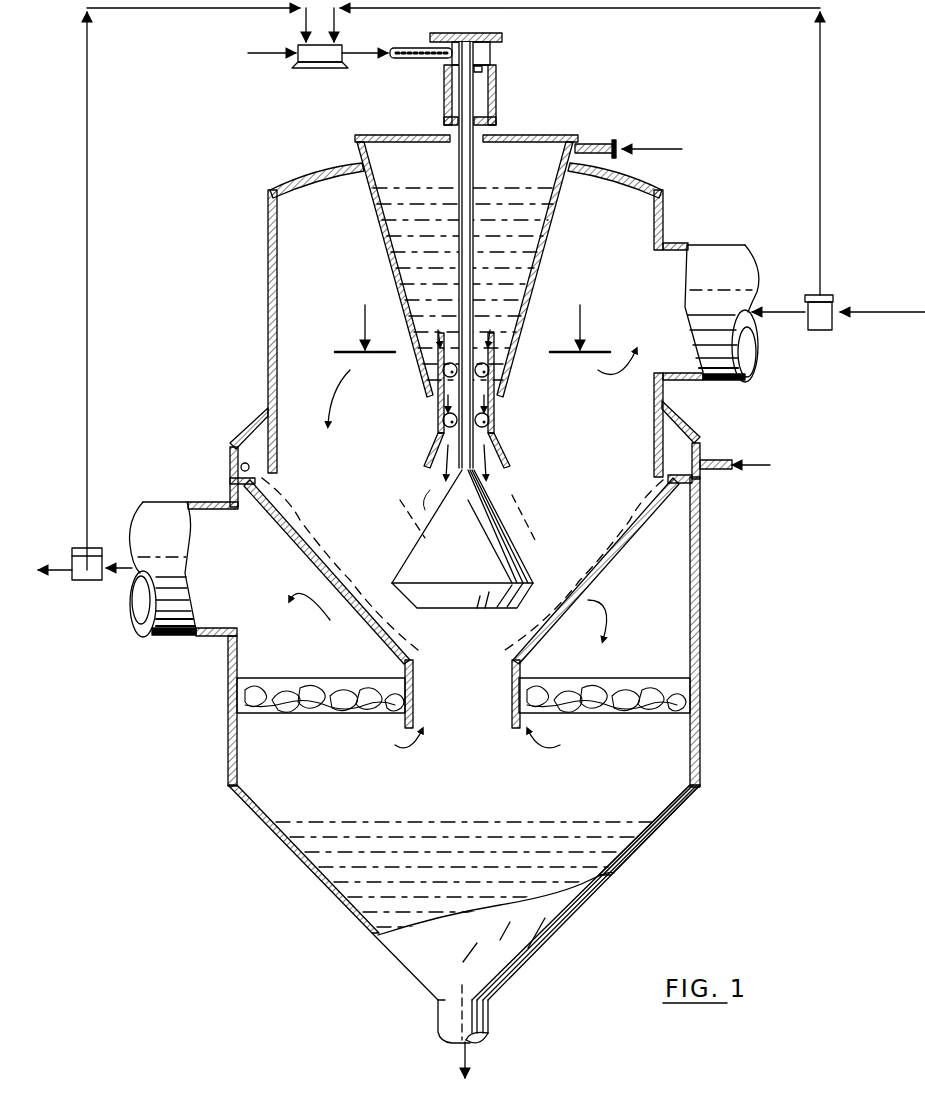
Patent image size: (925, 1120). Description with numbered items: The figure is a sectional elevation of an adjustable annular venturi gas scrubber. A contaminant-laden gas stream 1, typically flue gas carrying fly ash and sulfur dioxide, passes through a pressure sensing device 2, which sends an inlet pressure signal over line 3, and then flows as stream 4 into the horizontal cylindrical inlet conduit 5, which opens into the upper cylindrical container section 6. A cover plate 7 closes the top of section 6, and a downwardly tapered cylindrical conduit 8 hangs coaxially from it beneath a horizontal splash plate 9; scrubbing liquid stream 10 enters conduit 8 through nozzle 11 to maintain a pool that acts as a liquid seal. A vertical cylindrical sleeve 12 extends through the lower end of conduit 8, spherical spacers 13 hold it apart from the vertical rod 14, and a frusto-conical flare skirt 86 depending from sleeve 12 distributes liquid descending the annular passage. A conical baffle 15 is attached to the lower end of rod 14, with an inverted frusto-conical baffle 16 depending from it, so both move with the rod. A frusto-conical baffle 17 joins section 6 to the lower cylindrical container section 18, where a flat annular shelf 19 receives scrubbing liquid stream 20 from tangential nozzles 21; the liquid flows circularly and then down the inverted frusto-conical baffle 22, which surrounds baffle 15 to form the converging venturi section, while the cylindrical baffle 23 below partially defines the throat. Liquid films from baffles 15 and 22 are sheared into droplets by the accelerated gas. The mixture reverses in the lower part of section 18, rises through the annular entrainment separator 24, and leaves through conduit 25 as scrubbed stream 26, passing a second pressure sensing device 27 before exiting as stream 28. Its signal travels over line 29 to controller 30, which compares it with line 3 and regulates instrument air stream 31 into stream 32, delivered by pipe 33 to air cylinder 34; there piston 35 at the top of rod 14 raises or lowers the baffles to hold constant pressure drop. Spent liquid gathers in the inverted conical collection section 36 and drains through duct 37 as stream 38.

The contaminant-laden gas stream 1 is at (886, 273).
The pressure sensing device 2 is at (856, 346).
The line 3 is at (685, 9).
The stream 4 is at (780, 318).
The horizontal cylindrical inlet conduit 5 is at (728, 245).
The cylindrical container section 6 is at (268, 215).
The cover plate 7 is at (300, 178).
The cylindrical conduit 8 is at (400, 260).
The horizontal splash plate 9 is at (532, 134).
The scrubbing liquid solution or slurry stream 10 is at (655, 148).
The nozzle 11 is at (596, 143).
The vertical cylindrical sleeve 12 is at (438, 405).
The spacers 13 is at (443, 372).
The vertical rod 14 is at (474, 258).
The conical baffle 15 is at (520, 525).
The inverted frusto-conical baffle 16 is at (488, 608).
The frusto-conical baffle 17 is at (252, 430).
The lower vertical cylindrical container section 18 is at (228, 682).
The shelf 19 is at (700, 482).
The scrubbing liquid or slurry stream 20 is at (761, 442).
The nozzles 21 is at (230, 462).
The inverted frusto-conical baffle 22 is at (285, 520).
The vertical cylindrical baffle 23 is at (413, 690).
The annular entrainment separator 24 is at (325, 713).
The conduit 25 is at (165, 636).
The scrubbed gas stream 26 is at (120, 568).
The pressure sensing device 27 is at (87, 580).
The stream 28 is at (52, 570).
The line 29 is at (140, 10).
The controller 30 is at (318, 68).
The instrument air stream 31 is at (255, 53).
The stream 32 is at (363, 53).
The pipe 33 is at (410, 58).
The air cylinder 34 is at (490, 52).
The piston 35 is at (482, 74).
The lower collection section 36 is at (662, 822).
The duct 37 is at (489, 1012).
The stream 38 is at (468, 1055).
The frusto-conical flare skirt 86 is at (424, 468).